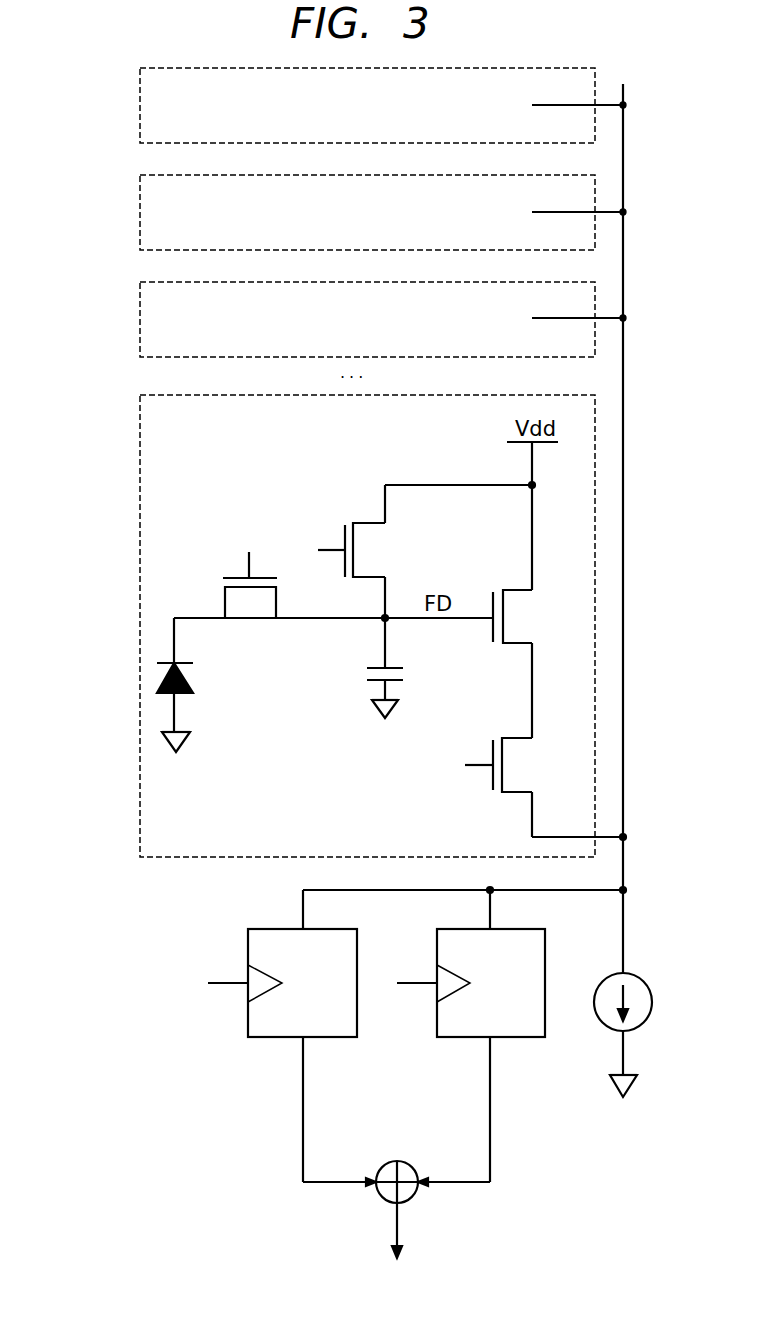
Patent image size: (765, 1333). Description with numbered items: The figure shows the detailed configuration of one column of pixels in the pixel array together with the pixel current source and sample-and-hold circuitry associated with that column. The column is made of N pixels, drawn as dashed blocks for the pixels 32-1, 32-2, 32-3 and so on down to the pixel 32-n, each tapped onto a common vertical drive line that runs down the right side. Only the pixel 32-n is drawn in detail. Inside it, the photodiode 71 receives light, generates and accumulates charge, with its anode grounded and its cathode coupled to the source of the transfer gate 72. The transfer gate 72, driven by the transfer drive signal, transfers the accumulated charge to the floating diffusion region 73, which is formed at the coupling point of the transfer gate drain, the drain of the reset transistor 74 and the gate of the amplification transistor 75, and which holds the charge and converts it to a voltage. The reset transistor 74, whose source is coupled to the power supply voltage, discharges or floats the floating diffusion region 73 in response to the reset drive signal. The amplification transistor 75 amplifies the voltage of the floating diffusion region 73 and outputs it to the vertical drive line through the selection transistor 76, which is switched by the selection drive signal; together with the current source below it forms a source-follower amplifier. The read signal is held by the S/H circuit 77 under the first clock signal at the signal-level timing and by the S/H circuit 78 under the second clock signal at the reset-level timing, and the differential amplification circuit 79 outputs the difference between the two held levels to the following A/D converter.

The pixel 32-1 is at (141, 102).
The pixel 32-2 is at (141, 207).
The pixel 32-3 is at (141, 314).
The pixel 32-n is at (141, 431).
The photodiode 71 is at (183, 695).
The transfer gate 72 is at (263, 608).
The floating diffusion region 73 is at (398, 631).
The reset transistor 74 is at (378, 538).
The amplification transistor 75 is at (522, 605).
The selection transistor 76 is at (522, 753).
The S/H circuit 77 is at (517, 1040).
The S/H circuit 78 is at (270, 1040).
The differential amplification circuit 79 is at (410, 1200).